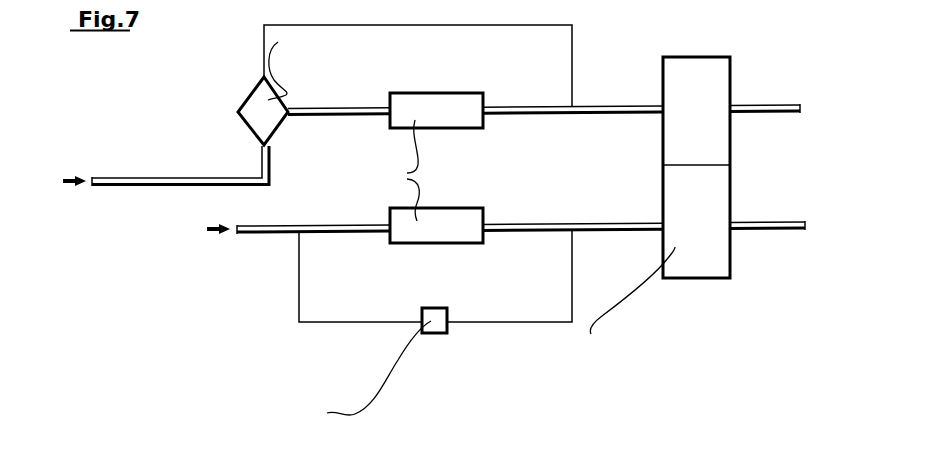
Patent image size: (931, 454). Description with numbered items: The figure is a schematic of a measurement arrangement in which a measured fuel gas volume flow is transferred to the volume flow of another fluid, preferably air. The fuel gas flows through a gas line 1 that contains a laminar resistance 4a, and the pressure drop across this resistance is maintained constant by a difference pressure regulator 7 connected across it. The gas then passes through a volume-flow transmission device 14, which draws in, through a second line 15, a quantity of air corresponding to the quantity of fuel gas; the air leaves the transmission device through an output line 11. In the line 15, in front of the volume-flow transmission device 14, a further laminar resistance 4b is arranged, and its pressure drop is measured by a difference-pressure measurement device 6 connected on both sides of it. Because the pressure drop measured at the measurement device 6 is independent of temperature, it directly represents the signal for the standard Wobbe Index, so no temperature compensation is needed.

The gas line 1 is at (111, 177).
The laminar resistance 4a is at (447, 93).
The laminar resistance 4b is at (445, 208).
The difference-pressure measurement device 6 is at (438, 334).
The difference pressure regulator 7 is at (248, 97).
The output flow line 11 is at (783, 222).
The volume-flow transmission device 14 is at (731, 143).
The line 15 is at (258, 234).